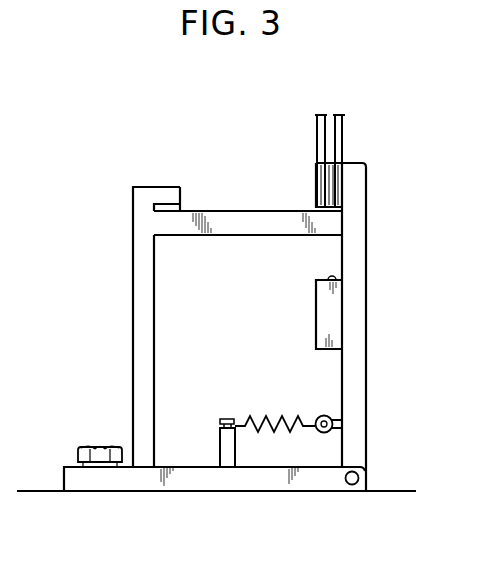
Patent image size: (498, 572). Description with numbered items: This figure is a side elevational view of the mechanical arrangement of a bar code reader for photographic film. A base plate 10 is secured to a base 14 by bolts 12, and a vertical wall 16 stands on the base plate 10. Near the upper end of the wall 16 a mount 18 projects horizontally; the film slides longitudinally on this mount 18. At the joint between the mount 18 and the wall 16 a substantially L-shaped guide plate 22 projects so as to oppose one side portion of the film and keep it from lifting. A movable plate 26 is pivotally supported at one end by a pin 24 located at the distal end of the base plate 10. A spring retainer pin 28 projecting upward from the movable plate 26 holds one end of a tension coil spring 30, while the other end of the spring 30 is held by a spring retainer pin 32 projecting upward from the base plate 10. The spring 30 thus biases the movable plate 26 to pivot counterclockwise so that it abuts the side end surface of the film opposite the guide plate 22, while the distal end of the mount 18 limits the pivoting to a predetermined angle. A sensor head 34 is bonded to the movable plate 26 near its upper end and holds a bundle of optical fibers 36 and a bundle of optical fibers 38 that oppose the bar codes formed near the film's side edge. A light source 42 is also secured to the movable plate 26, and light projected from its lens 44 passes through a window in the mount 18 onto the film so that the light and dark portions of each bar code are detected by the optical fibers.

The base plate 10 is at (183, 486).
The bolts 12 is at (98, 447).
The base 14 is at (396, 490).
The vertical wall 16 is at (137, 267).
The mount 18 is at (231, 212).
The guide plate 22 is at (167, 194).
The pin 24 is at (350, 489).
The movable plate 26 is at (364, 375).
The spring retainer pin 28 is at (321, 414).
The tension coil spring 30 is at (271, 411).
The spring retainer pin 32 is at (219, 440).
The sensor head 34 is at (308, 169).
The bundle of optical fibers 36 is at (315, 120).
The bundle of optical fibers 38 is at (344, 122).
The light source 42 is at (316, 312).
The lens 44 is at (330, 277).